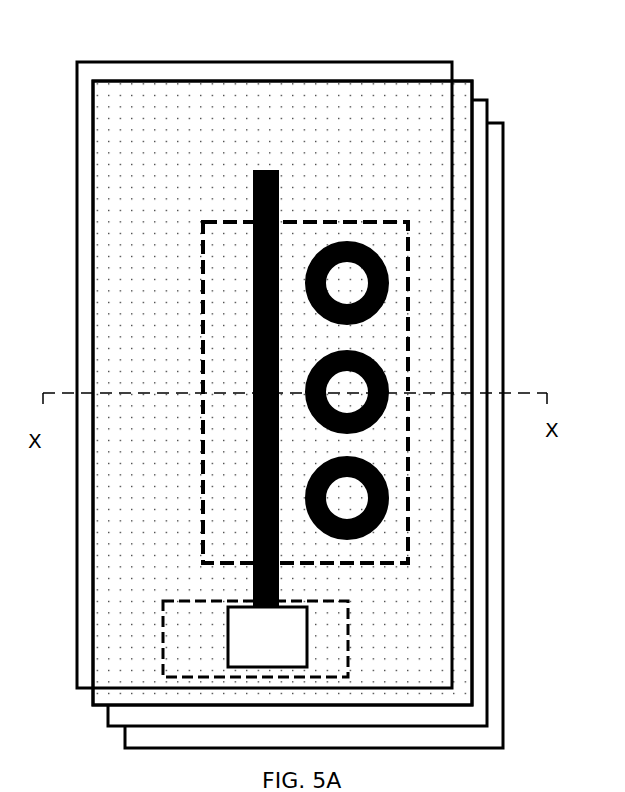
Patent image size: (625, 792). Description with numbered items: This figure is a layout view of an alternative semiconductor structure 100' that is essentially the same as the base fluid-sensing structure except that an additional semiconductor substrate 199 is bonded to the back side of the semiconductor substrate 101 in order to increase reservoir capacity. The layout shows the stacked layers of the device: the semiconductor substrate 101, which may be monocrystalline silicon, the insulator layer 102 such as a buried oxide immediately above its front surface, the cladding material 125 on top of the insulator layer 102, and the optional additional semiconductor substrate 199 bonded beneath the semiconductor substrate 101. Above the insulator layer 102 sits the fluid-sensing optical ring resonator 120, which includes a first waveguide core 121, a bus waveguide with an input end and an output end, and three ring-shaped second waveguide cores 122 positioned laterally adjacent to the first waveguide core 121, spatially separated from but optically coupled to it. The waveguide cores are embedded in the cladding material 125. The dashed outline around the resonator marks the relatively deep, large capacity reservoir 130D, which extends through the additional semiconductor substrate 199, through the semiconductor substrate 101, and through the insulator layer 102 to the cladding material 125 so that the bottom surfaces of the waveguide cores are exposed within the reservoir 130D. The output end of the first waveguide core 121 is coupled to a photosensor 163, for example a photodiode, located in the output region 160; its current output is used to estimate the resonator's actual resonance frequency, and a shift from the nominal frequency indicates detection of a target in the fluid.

The semiconductor structure 100' is at (327, 376).
The cladding material 125 is at (452, 97).
The insulator layer 102 is at (472, 118).
The semiconductor substrate 101 is at (487, 148).
The additional semiconductor substrate 199 is at (503, 175).
The fluid-sensing optical ring resonator 120 is at (310, 190).
The reservoir 130D is at (408, 255).
The second waveguide cores 122 is at (389, 283).
The first waveguide core 121 is at (279, 541).
The output region 160 is at (163, 641).
The photosensor 163 is at (267, 637).